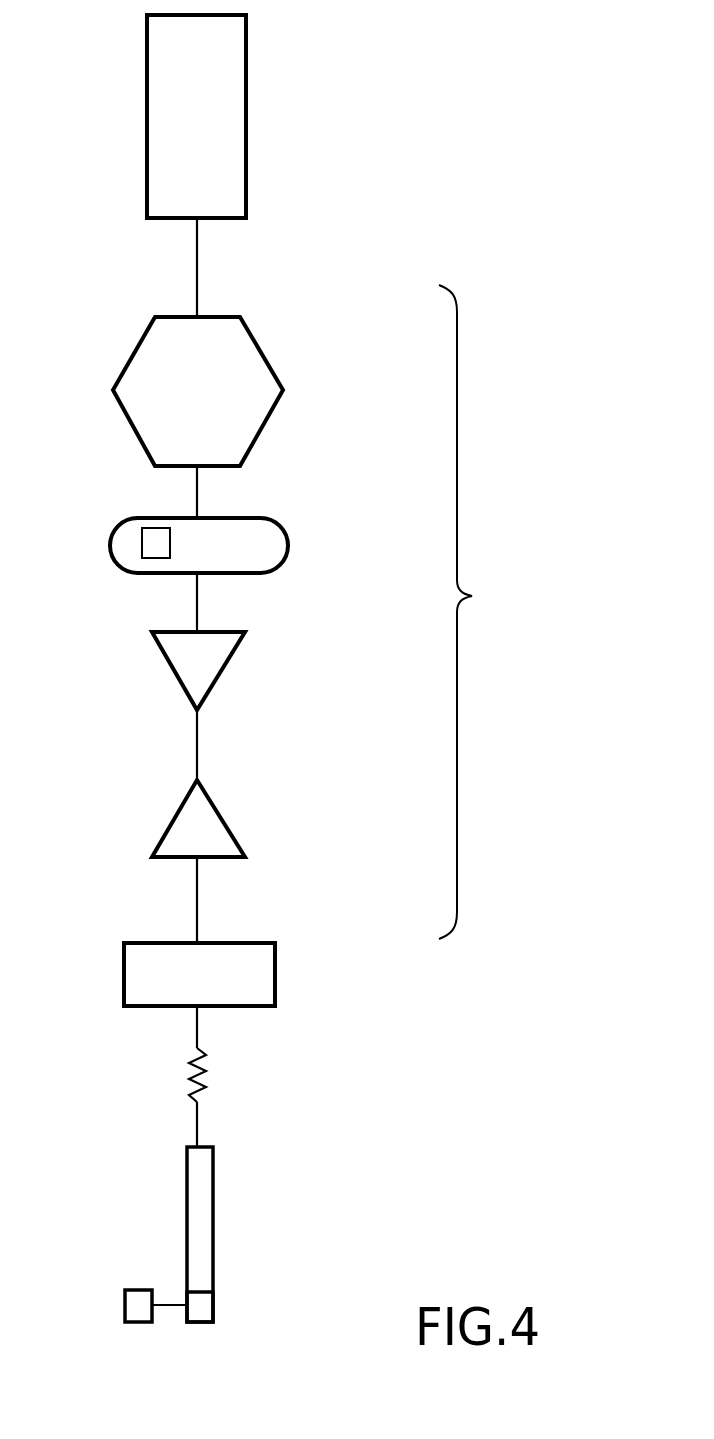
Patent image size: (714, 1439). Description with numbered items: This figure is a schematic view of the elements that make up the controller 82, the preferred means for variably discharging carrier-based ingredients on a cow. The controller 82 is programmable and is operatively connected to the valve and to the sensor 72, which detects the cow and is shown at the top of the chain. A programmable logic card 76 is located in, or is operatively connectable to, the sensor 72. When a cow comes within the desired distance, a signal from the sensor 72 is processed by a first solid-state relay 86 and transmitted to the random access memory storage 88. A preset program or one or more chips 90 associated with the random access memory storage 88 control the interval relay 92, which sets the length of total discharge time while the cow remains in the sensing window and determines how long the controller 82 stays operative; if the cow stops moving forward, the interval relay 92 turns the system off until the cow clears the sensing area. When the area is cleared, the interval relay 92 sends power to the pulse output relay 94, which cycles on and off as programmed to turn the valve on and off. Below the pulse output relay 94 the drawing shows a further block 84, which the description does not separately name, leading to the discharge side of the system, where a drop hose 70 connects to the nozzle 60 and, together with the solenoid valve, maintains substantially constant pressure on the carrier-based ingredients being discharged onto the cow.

The sensor 72 is at (246, 70).
The first solid-state relay 86 is at (113, 402).
The random access memory storage 88 is at (110, 545).
The chips 90 is at (156, 540).
The interval relay 92 is at (228, 658).
The pulse output relay 94 is at (218, 812).
The interface block 84 is at (275, 982).
The controller 82 is at (472, 596).
The drop hose 70 is at (213, 1228).
The nozzle 60 is at (213, 1303).
The programmable logic card 76 is at (143, 1290).